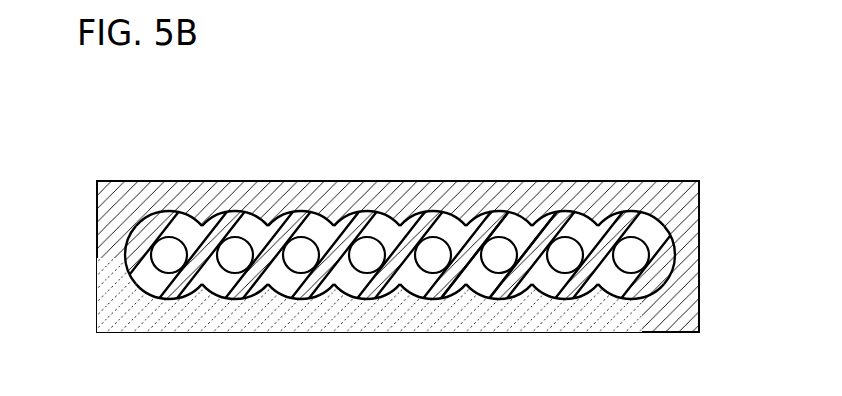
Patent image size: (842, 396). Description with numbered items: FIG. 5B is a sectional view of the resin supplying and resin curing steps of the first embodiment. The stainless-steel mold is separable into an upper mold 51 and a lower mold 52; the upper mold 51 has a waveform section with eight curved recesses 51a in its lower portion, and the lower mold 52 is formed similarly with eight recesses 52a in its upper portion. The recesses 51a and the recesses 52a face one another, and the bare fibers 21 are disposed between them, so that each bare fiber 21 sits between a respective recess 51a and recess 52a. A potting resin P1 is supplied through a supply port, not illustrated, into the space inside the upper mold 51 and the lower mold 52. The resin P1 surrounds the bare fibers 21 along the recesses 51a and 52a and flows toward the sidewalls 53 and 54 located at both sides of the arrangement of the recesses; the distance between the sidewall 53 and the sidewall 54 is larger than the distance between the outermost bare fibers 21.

The upper mold 51 is at (152, 191).
The curved recesses of the upper mold 51a is at (352, 216).
The lower mold 52 is at (640, 312).
The recesses of the lower mold 52a is at (352, 296).
The bare fibers 21 is at (297, 268).
The sidewall 53 is at (129, 268).
The sidewall 54 is at (672, 261).
The potting resin P1 is at (503, 245).